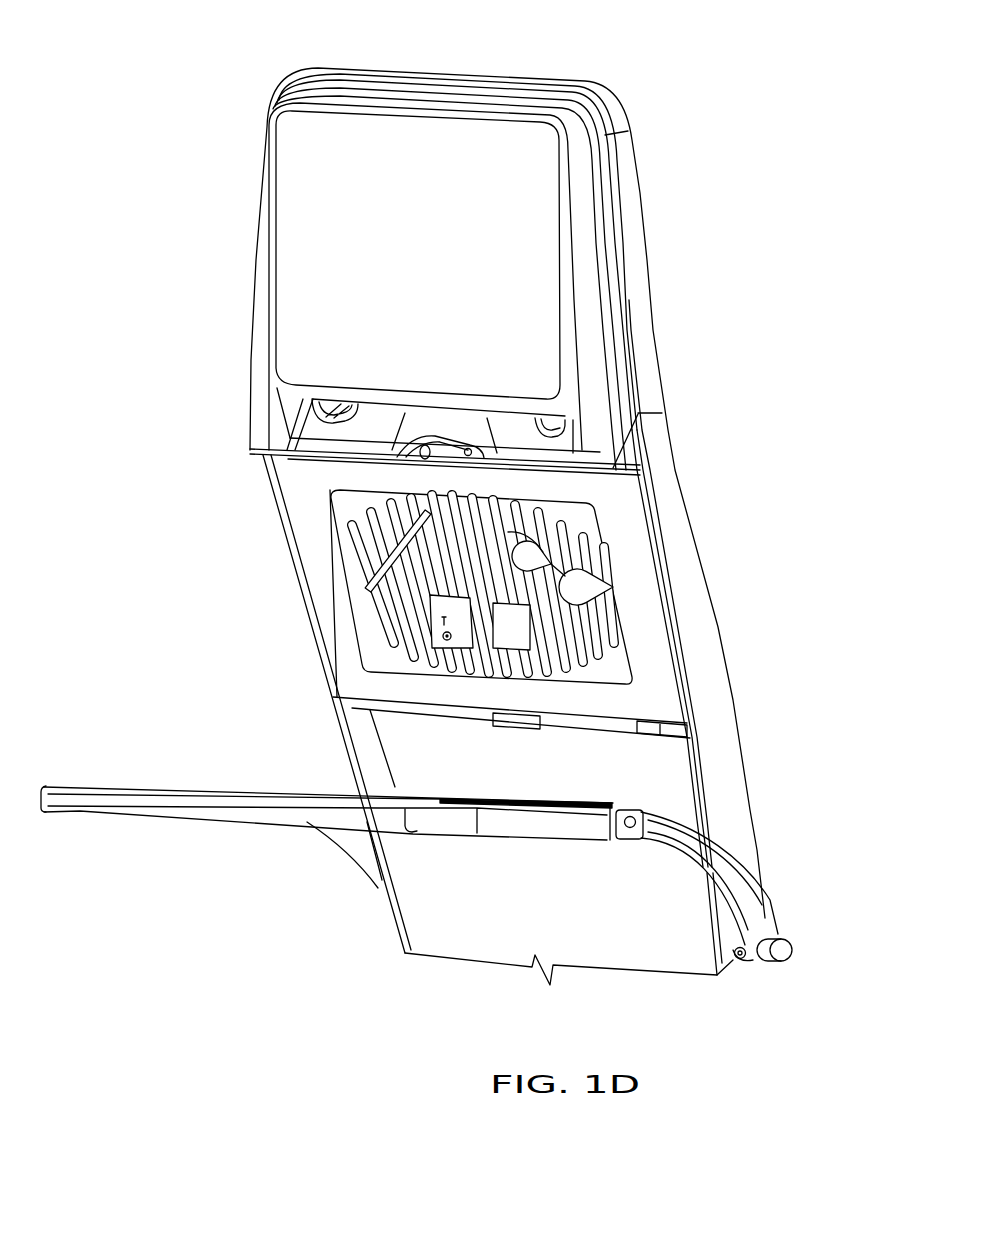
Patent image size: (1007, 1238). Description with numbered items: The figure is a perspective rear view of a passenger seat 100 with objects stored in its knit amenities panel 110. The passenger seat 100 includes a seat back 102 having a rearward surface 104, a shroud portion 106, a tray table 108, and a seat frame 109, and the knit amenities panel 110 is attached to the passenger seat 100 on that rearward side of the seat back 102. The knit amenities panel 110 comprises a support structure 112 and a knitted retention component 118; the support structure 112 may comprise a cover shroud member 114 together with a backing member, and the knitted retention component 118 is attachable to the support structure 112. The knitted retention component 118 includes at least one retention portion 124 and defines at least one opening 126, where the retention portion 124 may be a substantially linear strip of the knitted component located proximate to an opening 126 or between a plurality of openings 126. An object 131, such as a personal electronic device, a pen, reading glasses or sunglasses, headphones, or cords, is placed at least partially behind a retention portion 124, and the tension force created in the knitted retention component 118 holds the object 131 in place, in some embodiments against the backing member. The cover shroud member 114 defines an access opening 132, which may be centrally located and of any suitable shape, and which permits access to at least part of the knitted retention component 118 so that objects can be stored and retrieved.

The passenger seat 100 is at (224, 43).
The seat back 102 is at (624, 189).
The rearward surface 104 is at (620, 777).
The shroud portion 106 is at (248, 355).
The tray table 108 is at (220, 787).
The seat frame 109 is at (792, 949).
The knit amenities panel 110 is at (675, 510).
The support structure 112 is at (638, 415).
The cover shroud member 114 is at (635, 632).
The knitted retention component 118 is at (345, 502).
The retention portion 124 is at (397, 612).
The opening 126 is at (349, 538).
The object 131 is at (613, 587).
The access opening 132 is at (345, 487).